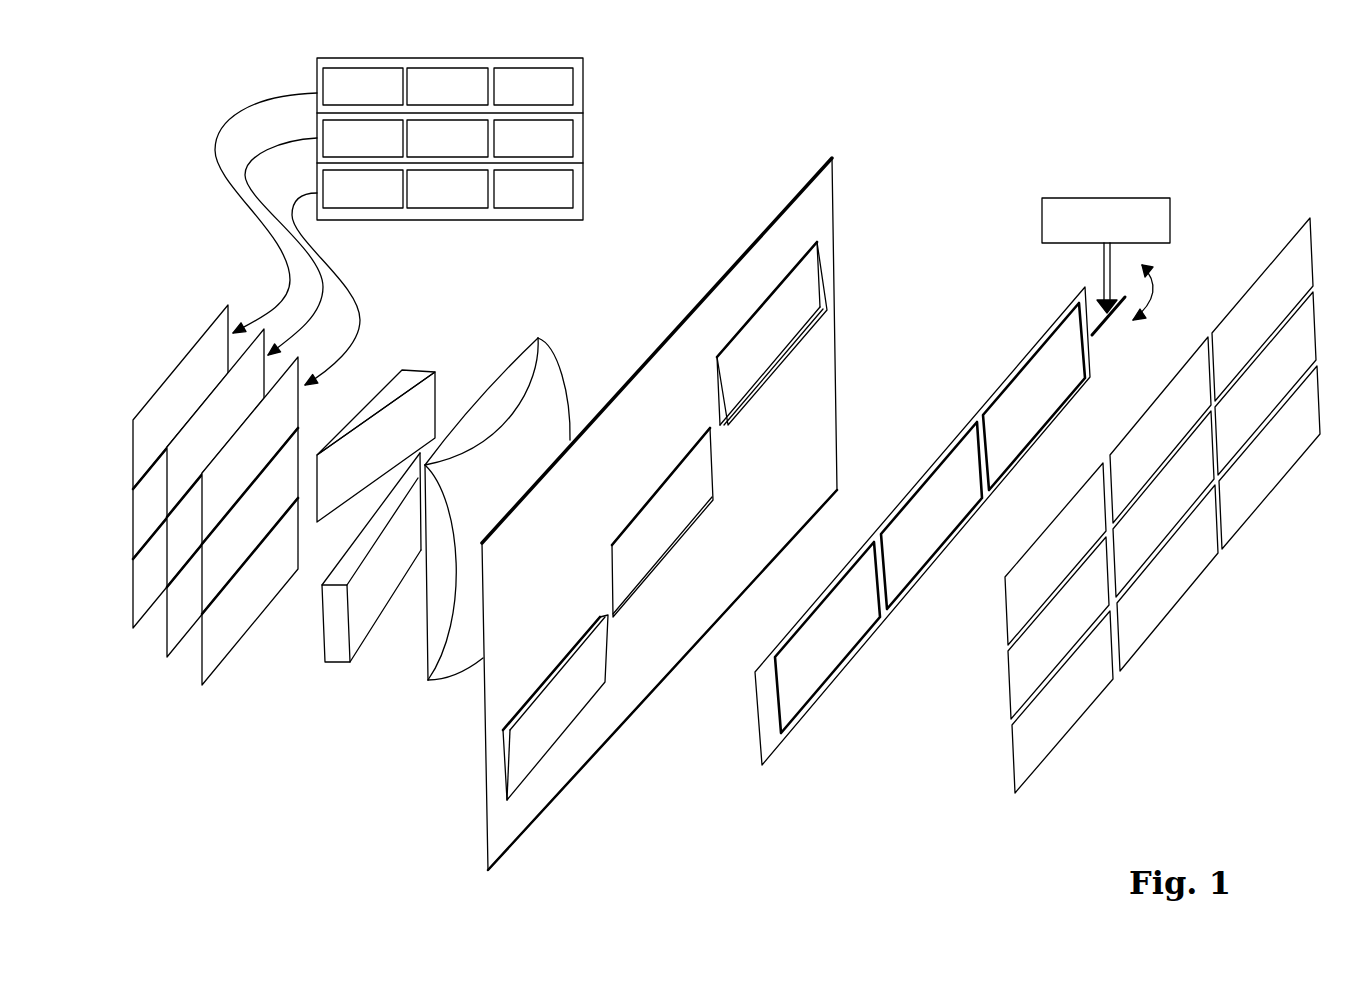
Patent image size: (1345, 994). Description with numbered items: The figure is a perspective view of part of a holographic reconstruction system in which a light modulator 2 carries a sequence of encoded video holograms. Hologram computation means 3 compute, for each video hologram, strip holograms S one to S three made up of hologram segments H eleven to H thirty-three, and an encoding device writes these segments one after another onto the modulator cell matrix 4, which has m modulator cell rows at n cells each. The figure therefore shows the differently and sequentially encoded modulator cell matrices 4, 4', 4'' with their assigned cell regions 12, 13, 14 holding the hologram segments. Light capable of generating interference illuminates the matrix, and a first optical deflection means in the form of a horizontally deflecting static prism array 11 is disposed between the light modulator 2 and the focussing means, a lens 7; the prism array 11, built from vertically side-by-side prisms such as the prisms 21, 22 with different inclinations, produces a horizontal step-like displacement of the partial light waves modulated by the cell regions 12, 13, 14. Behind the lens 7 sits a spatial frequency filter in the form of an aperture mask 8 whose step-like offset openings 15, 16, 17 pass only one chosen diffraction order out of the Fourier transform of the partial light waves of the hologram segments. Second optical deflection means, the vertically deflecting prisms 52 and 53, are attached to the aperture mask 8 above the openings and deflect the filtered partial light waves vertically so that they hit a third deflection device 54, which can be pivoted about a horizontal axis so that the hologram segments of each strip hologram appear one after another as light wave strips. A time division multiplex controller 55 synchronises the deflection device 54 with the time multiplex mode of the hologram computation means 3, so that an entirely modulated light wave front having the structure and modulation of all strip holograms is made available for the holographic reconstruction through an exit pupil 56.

The light modulator 2 is at (186, 530).
The hologram computation means 3 is at (419, 221).
The modulator cell matrix 4 is at (250, 535).
The modulator cell matrix 4' is at (210, 514).
The modulator cell matrix 4'' is at (151, 489).
The lens 7 is at (501, 496).
The aperture mask 8 is at (688, 513).
The prism array 11 is at (383, 493).
The cell region 12 is at (151, 397).
The cell region 13 is at (151, 466).
The cell region 14 is at (151, 536).
The opening 15 is at (555, 707).
The opening 16 is at (653, 522).
The opening 17 is at (763, 333).
The prism 21 is at (376, 516).
The prism 22 is at (371, 519).
The vertically deflecting prism 52 is at (718, 461).
The vertically deflecting prism 53 is at (557, 673).
The third deflection device 54 is at (940, 517).
The time division multiplex controller 55 is at (1106, 259).
The exit pupil 56 is at (1162, 484).